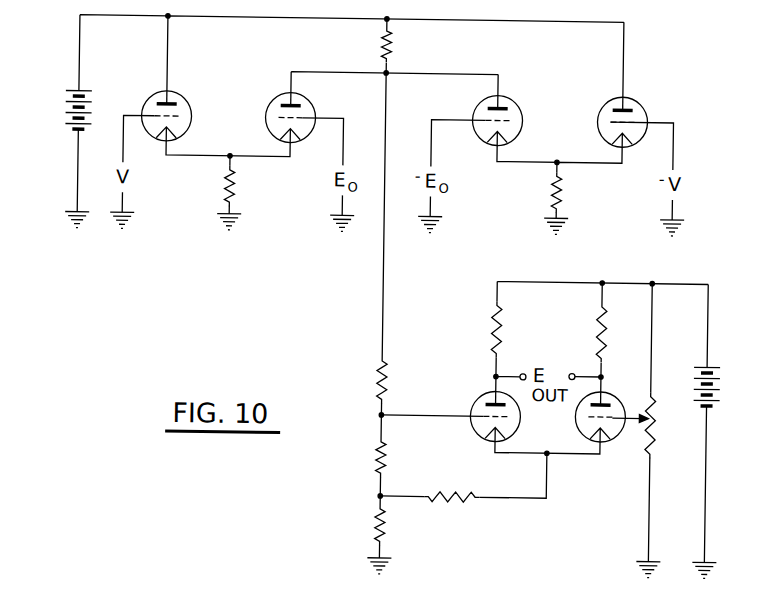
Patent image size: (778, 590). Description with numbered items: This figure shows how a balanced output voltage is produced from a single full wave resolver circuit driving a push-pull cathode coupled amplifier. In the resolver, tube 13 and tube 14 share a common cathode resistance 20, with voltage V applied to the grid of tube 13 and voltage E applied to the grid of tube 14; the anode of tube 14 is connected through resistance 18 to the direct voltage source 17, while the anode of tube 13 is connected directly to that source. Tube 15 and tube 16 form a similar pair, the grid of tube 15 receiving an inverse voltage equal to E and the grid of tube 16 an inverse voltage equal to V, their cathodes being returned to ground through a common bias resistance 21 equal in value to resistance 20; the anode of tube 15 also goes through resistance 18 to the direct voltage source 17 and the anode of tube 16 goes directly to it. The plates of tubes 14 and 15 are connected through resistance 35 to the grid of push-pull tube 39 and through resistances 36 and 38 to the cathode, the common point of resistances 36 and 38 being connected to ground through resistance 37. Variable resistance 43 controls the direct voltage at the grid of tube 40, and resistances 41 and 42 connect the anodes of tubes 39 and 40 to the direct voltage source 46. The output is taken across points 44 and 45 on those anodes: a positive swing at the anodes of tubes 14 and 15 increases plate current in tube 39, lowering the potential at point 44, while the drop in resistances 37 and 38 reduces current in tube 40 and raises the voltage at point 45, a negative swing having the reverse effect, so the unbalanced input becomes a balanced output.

The tube 13 is at (181, 101).
The tube 14 is at (273, 100).
The tube 15 is at (513, 105).
The tube 16 is at (637, 105).
The direct voltage source 17 is at (64, 110).
The resistance 18 is at (388, 45).
The common cathode resistance 20 is at (233, 185).
The common bias resistance 21 is at (560, 188).
The resistance 35 is at (379, 382).
The resistance 36 is at (378, 458).
The resistance 37 is at (378, 526).
The resistance 38 is at (452, 494).
The push-pull tube 39 is at (479, 402).
The tube 40 is at (616, 395).
The resistance 41 is at (493, 326).
The resistance 42 is at (593, 322).
The variable resistance 43 is at (657, 443).
The point 44 is at (523, 372).
The point 45 is at (573, 371).
The direct voltage source 46 is at (722, 385).